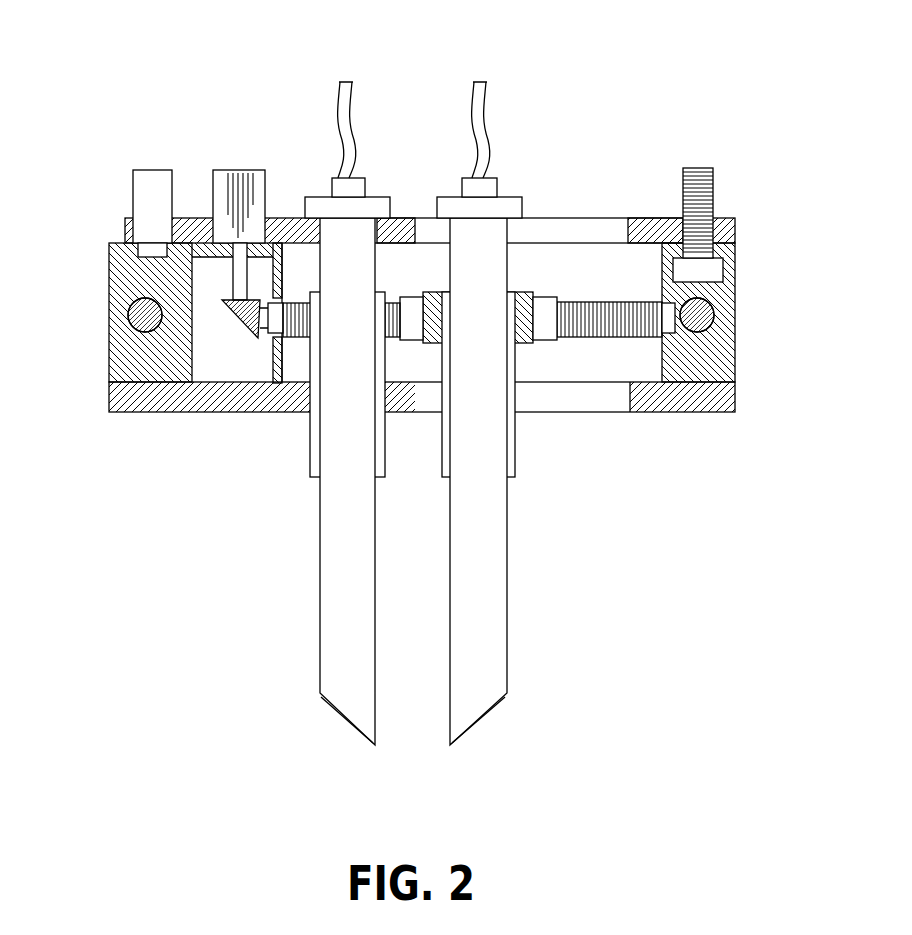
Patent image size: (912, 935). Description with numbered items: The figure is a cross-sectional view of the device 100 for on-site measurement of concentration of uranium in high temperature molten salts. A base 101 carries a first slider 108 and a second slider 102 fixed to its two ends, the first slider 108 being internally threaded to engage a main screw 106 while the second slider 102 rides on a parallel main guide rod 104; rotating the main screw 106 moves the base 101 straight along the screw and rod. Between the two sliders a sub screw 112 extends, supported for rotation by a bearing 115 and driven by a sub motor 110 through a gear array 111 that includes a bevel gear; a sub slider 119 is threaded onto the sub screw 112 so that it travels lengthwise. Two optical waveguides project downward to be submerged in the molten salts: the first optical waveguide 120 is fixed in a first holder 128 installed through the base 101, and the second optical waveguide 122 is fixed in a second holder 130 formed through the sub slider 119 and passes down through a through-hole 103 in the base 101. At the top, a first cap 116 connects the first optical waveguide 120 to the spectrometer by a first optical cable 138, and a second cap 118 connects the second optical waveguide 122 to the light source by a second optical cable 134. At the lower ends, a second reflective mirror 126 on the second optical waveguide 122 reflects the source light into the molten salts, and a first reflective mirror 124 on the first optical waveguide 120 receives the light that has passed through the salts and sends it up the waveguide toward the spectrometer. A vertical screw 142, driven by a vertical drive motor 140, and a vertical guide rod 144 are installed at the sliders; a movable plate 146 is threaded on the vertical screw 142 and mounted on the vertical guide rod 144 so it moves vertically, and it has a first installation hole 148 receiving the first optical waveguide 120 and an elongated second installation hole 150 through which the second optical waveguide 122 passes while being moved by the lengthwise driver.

The device for on-site measurement of concentration of uranium 100 is at (82, 96).
The base 101 is at (735, 393).
The second slider 102 is at (727, 298).
The through-hole 103 is at (626, 400).
The main guide rod 104 is at (707, 332).
The main screw 106 is at (143, 333).
The first slider 108 is at (80, 250).
The sub motor 110 is at (218, 170).
The gear array 111 is at (230, 305).
The sub screw 112 is at (622, 300).
The bearing 115 is at (264, 335).
The first cap 116 is at (377, 203).
The second cap 118 is at (503, 203).
The sub slider 119 is at (527, 345).
The first optical waveguide 120 is at (337, 642).
The second optical waveguide 122 is at (488, 632).
The first reflective mirror 124 is at (342, 727).
The second reflective mirror 126 is at (480, 722).
The first holder 128 is at (310, 462).
The second holder 130 is at (512, 470).
The second optical cable 134 is at (482, 98).
The first optical cable 138 is at (350, 118).
The vertical drive motor 140 is at (713, 263).
The vertical screw 142 is at (717, 182).
The vertical guide rod 144 is at (140, 198).
The movable plate 146 is at (180, 215).
The first installation hole 148 is at (375, 235).
The second installation hole 150 is at (628, 232).